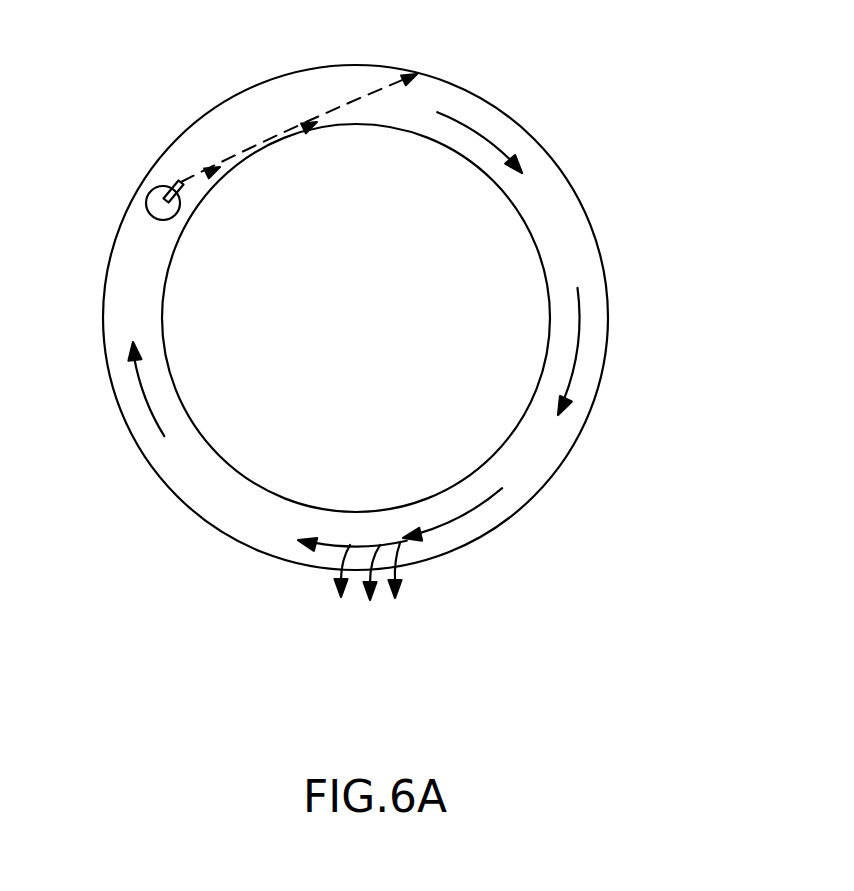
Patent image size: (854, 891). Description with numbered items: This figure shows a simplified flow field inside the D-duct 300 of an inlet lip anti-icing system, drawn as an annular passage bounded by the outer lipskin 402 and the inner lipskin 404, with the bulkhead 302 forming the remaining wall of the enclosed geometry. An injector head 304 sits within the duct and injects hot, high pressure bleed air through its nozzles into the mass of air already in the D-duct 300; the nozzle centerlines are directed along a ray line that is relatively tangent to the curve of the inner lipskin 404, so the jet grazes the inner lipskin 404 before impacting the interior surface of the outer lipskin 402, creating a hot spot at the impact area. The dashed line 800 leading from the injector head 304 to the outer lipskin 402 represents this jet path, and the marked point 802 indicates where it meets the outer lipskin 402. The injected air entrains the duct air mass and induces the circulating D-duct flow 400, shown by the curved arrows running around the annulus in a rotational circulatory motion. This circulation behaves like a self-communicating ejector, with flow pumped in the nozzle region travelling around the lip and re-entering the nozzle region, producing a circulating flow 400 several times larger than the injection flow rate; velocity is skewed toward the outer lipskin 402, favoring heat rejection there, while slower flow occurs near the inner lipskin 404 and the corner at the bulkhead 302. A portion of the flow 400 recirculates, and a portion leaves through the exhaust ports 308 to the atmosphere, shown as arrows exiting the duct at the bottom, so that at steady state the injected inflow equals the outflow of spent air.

The D-duct 300 is at (372, 325).
The bulkhead 302 is at (559, 211).
The injector head 304 is at (150, 168).
The exhaust ports 308 is at (424, 580).
The circulating D-duct flow 400 is at (580, 320).
The outer lipskin 402 is at (582, 203).
The inner lipskin 404 is at (520, 215).
The spray path 800 is at (262, 147).
The spray impact point 802 is at (417, 73).